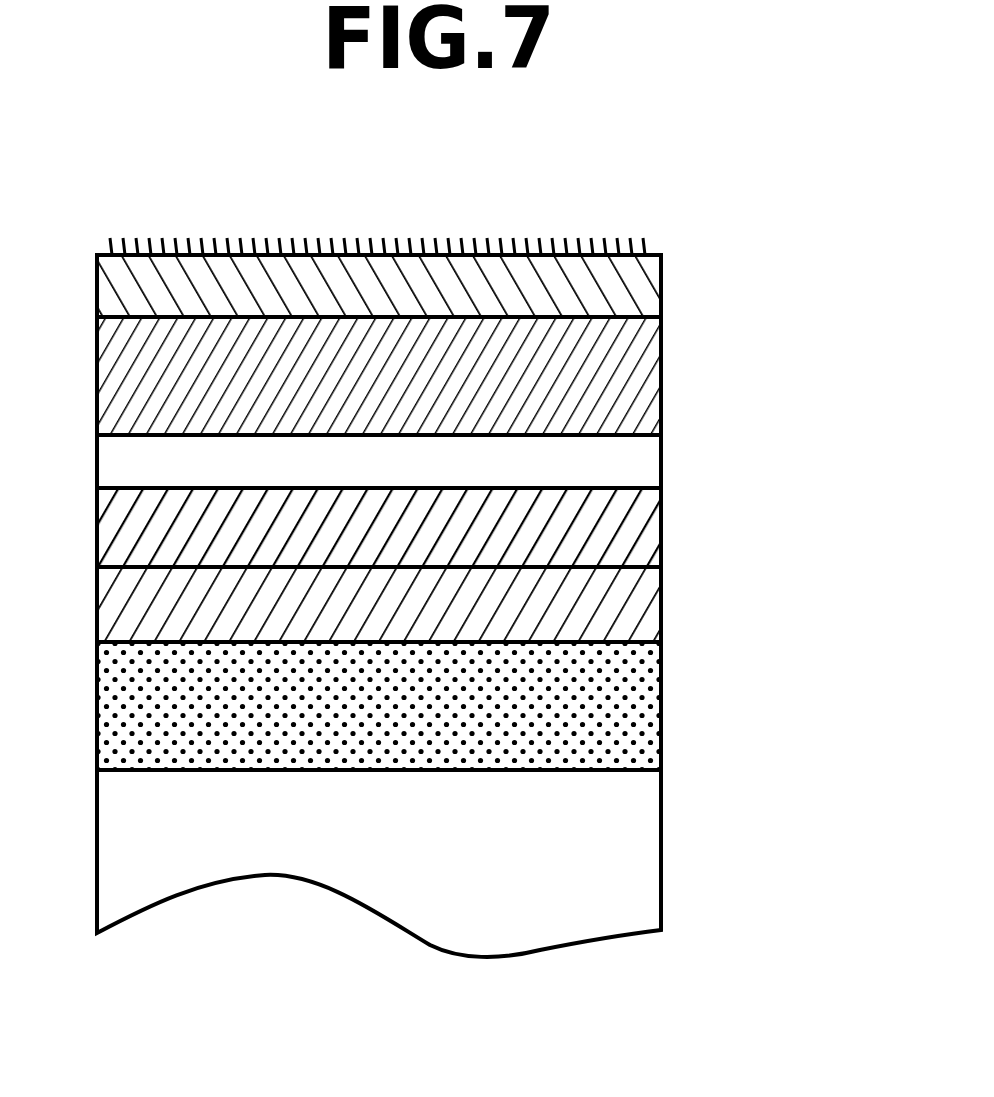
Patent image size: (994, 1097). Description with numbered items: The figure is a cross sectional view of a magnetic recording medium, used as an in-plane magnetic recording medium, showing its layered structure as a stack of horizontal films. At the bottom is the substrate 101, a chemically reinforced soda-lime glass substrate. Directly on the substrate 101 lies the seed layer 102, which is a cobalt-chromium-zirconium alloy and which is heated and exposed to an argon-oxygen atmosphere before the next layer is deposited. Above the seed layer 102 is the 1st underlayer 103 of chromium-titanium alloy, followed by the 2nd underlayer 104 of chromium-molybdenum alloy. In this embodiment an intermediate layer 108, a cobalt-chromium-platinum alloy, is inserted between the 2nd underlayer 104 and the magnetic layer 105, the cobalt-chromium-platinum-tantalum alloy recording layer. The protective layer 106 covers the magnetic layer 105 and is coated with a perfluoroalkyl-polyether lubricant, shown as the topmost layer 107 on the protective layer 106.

The substrate 101 is at (640, 817).
The seed layer 102 is at (645, 703).
The 1st underlayer 103 is at (647, 608).
The 2nd underlayer 104 is at (663, 522).
The magnetic layer 105 is at (663, 362).
The protective layer 106 is at (647, 307).
The electrode 107 is at (645, 242).
The intermediate layer 108 is at (643, 460).